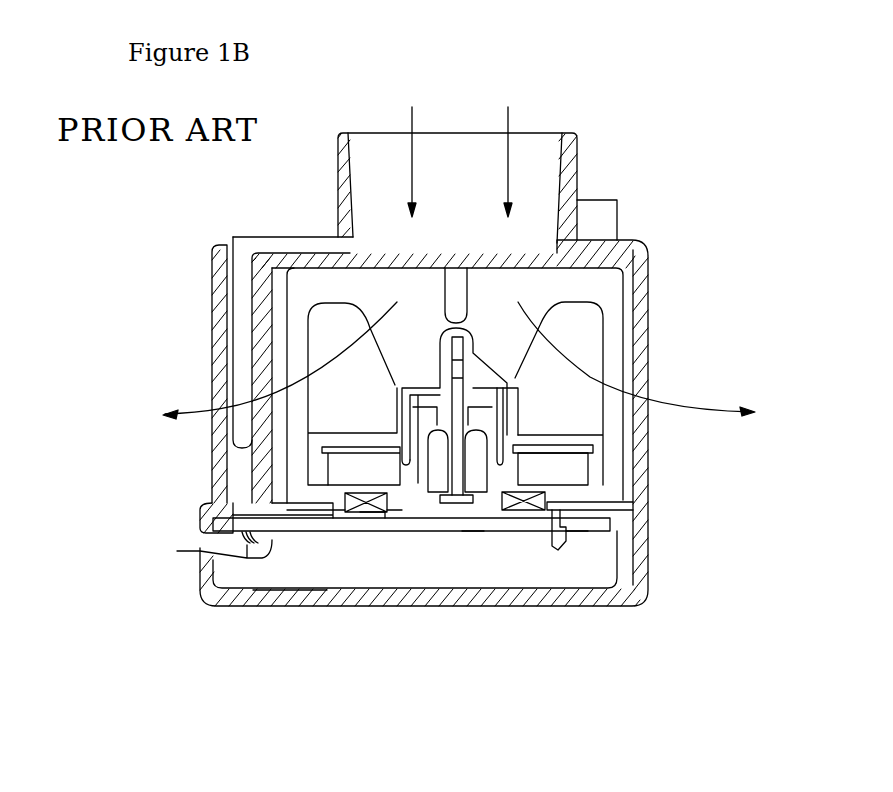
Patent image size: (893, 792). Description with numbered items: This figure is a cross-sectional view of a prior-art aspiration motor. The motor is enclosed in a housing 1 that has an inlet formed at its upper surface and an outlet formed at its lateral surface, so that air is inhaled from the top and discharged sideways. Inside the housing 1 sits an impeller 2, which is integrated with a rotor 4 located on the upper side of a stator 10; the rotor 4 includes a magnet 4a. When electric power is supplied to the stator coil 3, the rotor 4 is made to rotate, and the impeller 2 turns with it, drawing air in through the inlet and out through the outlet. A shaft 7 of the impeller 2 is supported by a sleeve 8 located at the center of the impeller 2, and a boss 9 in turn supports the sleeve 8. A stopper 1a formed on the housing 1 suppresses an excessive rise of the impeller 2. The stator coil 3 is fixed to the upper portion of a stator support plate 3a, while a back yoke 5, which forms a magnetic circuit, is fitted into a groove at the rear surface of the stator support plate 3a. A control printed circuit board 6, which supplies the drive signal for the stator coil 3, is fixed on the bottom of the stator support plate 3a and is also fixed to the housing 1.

The housing 1 is at (572, 180).
The stopper 1a is at (465, 306).
The impeller 2 is at (600, 332).
The stator coil 3 is at (618, 517).
The stator support plate 3a is at (473, 531).
The rotor 4 is at (608, 454).
The magnet 4a is at (585, 467).
The back yoke 5 is at (535, 531).
The control printed circuit board 6 is at (577, 531).
The shaft 7 is at (453, 370).
The sleeve 8 is at (430, 468).
The boss 9 is at (433, 452).
The stator 10 is at (600, 497).